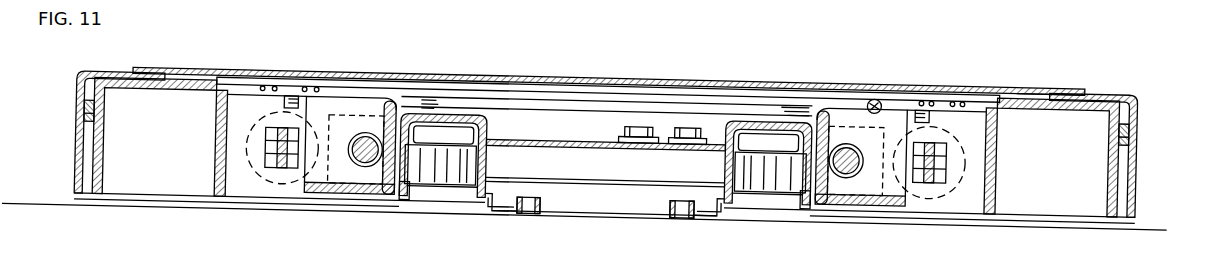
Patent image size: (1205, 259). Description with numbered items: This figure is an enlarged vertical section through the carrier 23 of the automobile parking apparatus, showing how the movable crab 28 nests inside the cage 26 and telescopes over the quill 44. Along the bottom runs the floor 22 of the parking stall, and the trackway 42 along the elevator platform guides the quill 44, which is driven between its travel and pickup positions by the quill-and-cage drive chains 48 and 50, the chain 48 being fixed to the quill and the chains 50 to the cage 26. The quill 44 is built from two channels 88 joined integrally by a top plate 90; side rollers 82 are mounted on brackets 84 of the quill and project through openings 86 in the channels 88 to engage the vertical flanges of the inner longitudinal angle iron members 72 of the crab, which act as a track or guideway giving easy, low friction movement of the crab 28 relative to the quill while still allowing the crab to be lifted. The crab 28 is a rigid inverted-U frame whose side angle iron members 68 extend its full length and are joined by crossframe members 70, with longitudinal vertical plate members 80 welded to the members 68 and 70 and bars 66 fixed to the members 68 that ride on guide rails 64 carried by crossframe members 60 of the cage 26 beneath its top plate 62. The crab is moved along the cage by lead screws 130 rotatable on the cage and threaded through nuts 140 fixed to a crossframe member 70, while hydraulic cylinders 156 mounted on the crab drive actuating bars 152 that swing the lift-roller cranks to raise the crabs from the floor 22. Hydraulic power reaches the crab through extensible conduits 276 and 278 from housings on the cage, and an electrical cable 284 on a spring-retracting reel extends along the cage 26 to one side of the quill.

The floor 22 is at (584, 199).
The carrier 23 is at (1051, 77).
The cage 26 is at (609, 66).
The movable crab 28 is at (604, 226).
The trackway 42 is at (603, 225).
The quill 44 is at (617, 235).
The chain 48 is at (538, 225).
The chain 50 is at (613, 42).
The crossframe member 60 is at (604, 142).
The top plate 62 is at (609, 71).
The guide rail 64 is at (604, 137).
The bar 66 is at (605, 119).
The side angle iron member 68 is at (613, 127).
The crossframe member 70 is at (448, 18).
The inner longitudinal angle iron member 72 is at (596, 177).
The longitudinal vertical plate member 80 is at (591, 174).
The side roller 82 is at (604, 202).
The bracket 84 is at (665, 52).
The opening 86 is at (604, 220).
The channel 88 is at (396, 33).
The top plate 90 is at (501, 57).
The lead screw 130 is at (615, 151).
The nut 140 is at (349, 173).
The actuating bar 152 is at (608, 140).
The hydraulic cylinder 156 is at (606, 150).
The extensible conduit 276 is at (649, 74).
The extensible conduit 278 is at (604, 73).
The electrical cable 284 is at (869, 84).